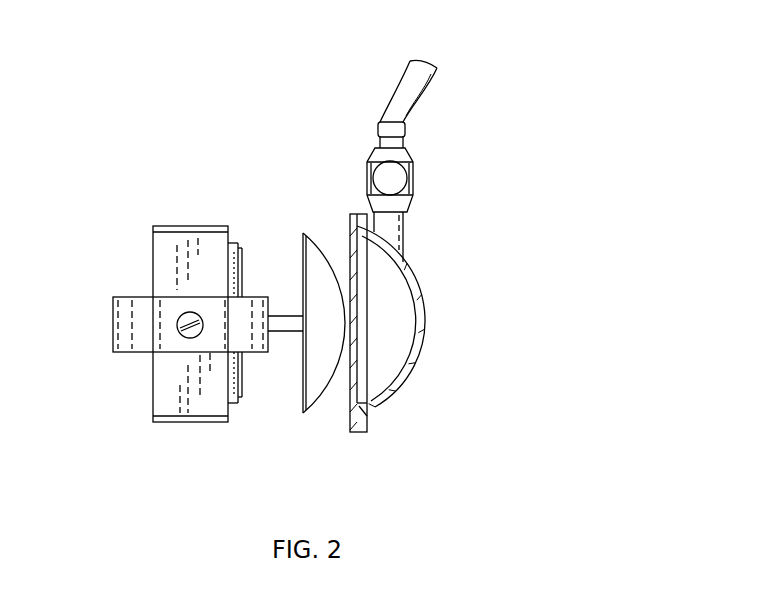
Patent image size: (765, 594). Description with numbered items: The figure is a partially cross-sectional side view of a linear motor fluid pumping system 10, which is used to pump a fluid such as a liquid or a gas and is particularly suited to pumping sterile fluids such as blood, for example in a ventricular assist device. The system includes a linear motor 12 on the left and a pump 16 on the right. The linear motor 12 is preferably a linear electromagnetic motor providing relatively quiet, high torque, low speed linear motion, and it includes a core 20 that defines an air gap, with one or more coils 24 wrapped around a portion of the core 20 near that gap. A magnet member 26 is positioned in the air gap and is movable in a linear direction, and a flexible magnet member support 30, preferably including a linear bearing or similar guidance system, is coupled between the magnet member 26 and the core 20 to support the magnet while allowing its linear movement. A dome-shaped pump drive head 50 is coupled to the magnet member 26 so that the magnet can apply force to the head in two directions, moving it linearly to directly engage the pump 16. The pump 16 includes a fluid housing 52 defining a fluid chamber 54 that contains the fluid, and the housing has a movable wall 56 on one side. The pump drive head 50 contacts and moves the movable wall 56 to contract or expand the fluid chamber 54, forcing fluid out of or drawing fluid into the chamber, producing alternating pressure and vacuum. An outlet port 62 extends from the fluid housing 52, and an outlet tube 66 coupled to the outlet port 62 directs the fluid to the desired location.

The linear motor fluid pumping system 10 is at (244, 146).
The linear motor 12 is at (134, 248).
The pump 16 is at (468, 288).
The core 20 is at (187, 226).
The coils 24 is at (241, 255).
The magnet member 26 is at (261, 290).
The magnet member support 30 is at (113, 326).
The pump drive head 50 is at (301, 400).
The fluid housing 52 is at (420, 366).
The fluid chamber 54 is at (400, 322).
The movable wall 56 is at (348, 388).
The outlet port 62 is at (415, 170).
The outlet tube 66 is at (436, 91).